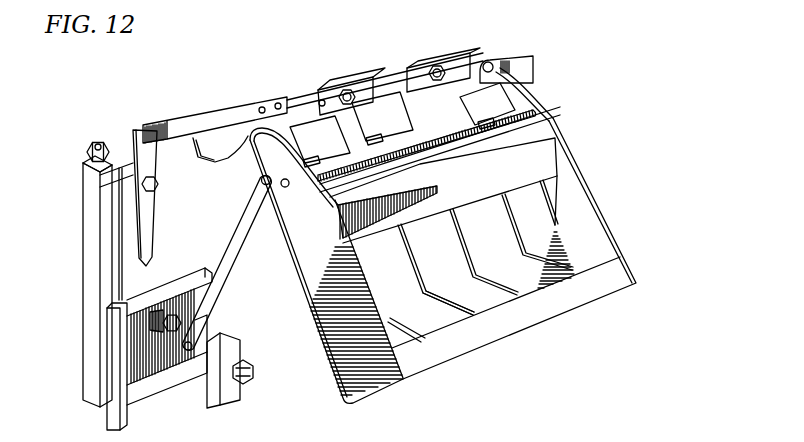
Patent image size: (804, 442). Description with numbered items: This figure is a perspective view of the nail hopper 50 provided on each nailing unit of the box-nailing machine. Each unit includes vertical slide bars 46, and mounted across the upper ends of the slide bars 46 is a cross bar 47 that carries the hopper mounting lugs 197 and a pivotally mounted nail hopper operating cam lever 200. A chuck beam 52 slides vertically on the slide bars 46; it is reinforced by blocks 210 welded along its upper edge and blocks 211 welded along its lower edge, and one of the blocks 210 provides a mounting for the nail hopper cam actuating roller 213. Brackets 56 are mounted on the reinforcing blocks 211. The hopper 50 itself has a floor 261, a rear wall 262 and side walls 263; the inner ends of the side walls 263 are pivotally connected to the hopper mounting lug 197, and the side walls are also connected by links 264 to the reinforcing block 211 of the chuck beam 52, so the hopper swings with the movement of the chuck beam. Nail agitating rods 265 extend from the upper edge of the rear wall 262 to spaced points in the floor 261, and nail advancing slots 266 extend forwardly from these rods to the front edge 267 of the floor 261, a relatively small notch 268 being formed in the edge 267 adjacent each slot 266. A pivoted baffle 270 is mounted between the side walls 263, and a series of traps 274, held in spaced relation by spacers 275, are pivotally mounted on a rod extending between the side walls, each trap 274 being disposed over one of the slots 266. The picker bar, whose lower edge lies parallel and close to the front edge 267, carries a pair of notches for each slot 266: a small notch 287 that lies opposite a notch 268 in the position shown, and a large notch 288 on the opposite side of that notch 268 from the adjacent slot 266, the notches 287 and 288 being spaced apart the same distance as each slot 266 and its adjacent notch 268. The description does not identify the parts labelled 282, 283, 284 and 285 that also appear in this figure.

The vertical slide bar 46 is at (92, 260).
The cross bar 47 is at (88, 189).
The nail hopper 50 is at (611, 178).
The chuck beam 52 is at (200, 276).
The bracket 56 is at (217, 392).
The hopper mounting lug 197 is at (207, 138).
The nail hopper operating cam lever 200 is at (151, 213).
The reinforcing block 210 is at (137, 323).
The reinforcing block 211 is at (164, 390).
The nail hopper cam actuating roller 213 is at (162, 310).
The floor 261 is at (543, 222).
The rear wall 262 is at (620, 270).
The side wall 263 is at (350, 373).
The link 264 is at (227, 278).
The nail agitating rod 265 is at (500, 286).
The nail advancing slot 266 is at (467, 260).
The front edge 267 is at (378, 86).
The notch 268 is at (405, 103).
The pivoted baffle 270 is at (543, 165).
The trap 274 is at (490, 117).
The spacer 275 is at (362, 158).
The tab 282 is at (323, 96).
The bolt bracket 283 is at (448, 62).
The bolt 284 is at (352, 88).
The cross bar 285 is at (178, 131).
The small notch 287 is at (286, 108).
The large notch 288 is at (245, 155).